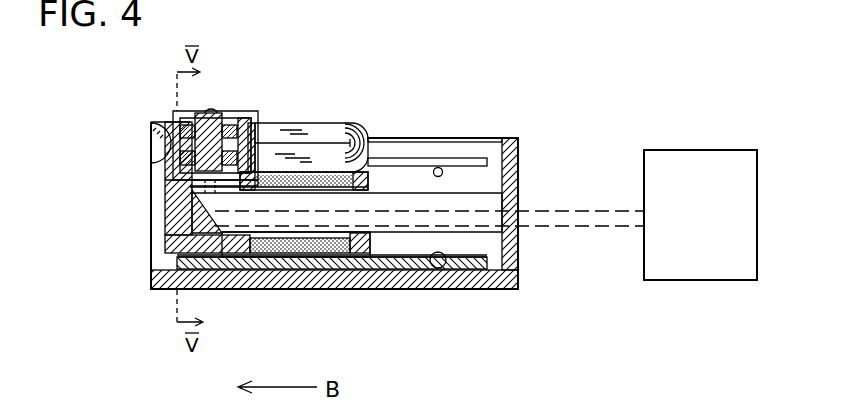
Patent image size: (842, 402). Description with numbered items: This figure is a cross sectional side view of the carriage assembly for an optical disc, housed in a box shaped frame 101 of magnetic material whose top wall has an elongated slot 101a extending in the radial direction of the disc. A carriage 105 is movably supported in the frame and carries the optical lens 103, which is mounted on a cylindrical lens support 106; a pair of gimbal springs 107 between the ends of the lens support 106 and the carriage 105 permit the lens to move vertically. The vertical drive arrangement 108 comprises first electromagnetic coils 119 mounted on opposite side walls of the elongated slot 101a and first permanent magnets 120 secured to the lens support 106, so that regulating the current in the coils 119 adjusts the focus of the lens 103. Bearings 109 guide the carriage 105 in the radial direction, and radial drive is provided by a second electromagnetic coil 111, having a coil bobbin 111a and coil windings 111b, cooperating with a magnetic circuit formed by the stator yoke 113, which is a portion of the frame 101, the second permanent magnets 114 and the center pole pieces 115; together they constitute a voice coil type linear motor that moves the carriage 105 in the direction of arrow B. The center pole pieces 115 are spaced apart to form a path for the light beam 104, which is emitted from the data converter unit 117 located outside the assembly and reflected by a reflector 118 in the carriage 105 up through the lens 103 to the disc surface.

The box shaped frame 101 is at (520, 151).
The elongated slot 101a is at (487, 139).
The optical lens 103 is at (214, 112).
The light beam 104 is at (585, 228).
The carriage 105 is at (197, 217).
The lens support 106 is at (170, 144).
The gimbal springs 107 is at (188, 114).
The vertical drive arrangement 108 is at (188, 116).
The bearings 109 is at (382, 176).
The second electromagnetic coil 111 is at (388, 260).
The coil bobbin 111a is at (285, 262).
The coil windings 111b is at (323, 246).
The stator yoke 113 is at (423, 268).
The second permanent magnets 114 is at (440, 167).
The center pole pieces 115 is at (518, 196).
The data converter unit 117 is at (710, 150).
The reflector 118 is at (165, 258).
The first electromagnetic coils 119 is at (298, 133).
The first permanent magnets 120 is at (165, 169).